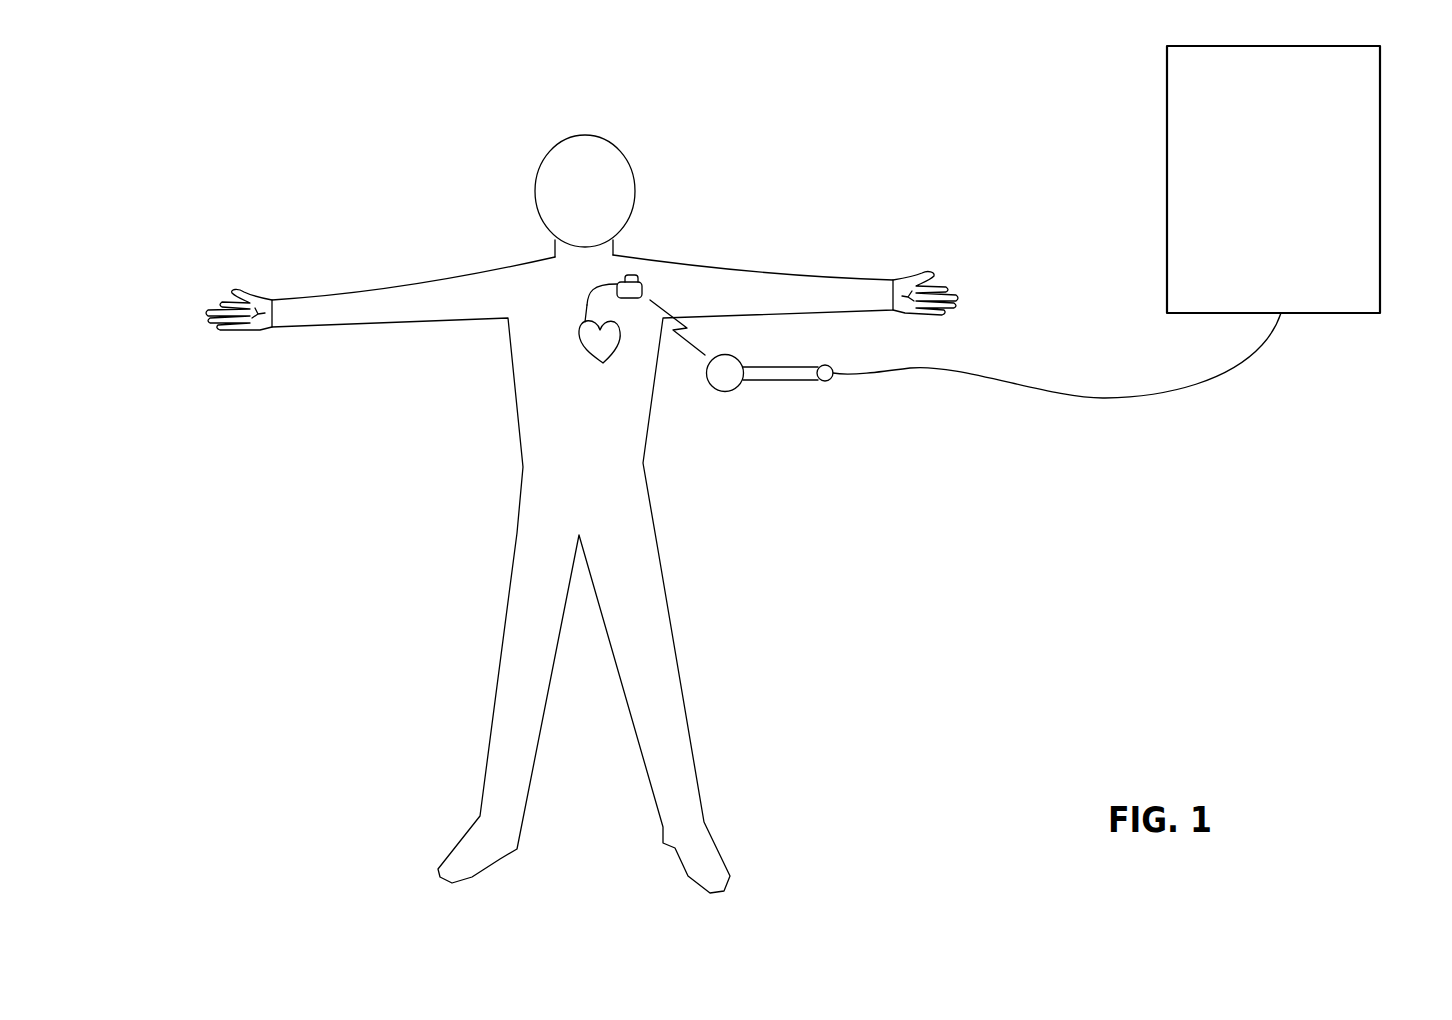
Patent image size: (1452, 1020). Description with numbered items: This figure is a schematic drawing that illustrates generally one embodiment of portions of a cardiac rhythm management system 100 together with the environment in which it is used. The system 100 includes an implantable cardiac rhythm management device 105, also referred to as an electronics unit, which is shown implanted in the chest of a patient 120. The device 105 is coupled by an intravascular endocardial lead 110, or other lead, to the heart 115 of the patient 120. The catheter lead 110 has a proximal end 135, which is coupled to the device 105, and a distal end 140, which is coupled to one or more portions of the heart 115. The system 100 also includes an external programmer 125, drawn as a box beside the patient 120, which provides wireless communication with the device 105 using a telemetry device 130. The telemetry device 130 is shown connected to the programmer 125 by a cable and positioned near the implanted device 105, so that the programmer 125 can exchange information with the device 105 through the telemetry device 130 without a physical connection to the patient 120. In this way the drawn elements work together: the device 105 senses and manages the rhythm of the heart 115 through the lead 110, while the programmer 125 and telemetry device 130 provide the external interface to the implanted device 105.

The cardiac rhythm management system 100 is at (992, 575).
The implantable cardiac rhythm management device 105 is at (623, 261).
The intravascular endocardial lead 110 is at (588, 297).
The heart 115 is at (589, 359).
The patient 120 is at (517, 418).
The external programmer 125 is at (1381, 270).
The telemetry device 130 is at (725, 392).
The proximal end 135 is at (617, 281).
The distal end 140 is at (584, 318).